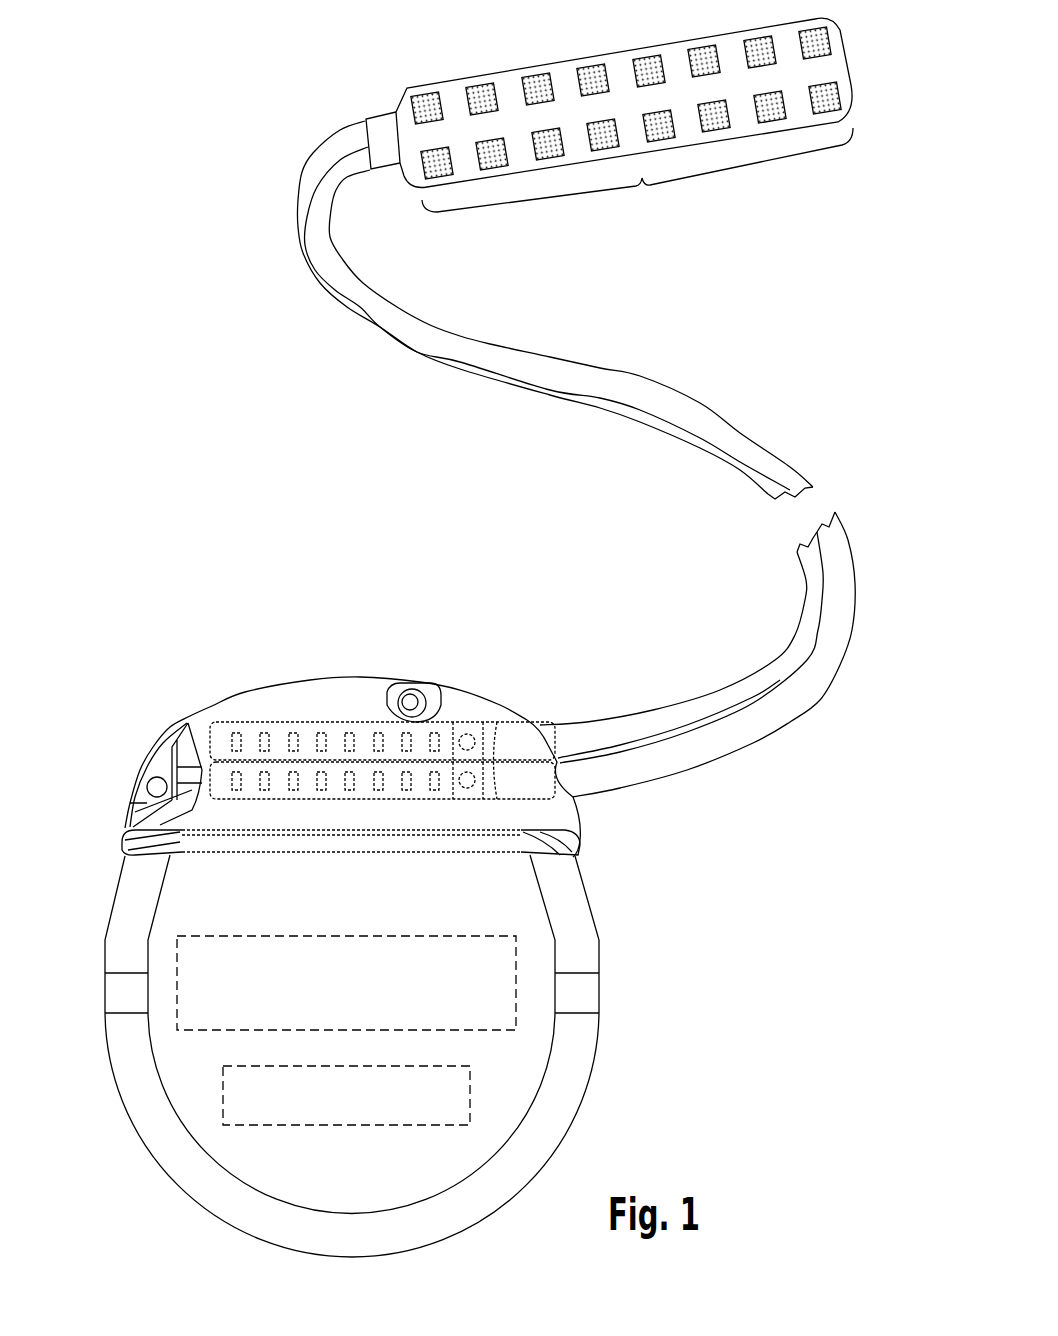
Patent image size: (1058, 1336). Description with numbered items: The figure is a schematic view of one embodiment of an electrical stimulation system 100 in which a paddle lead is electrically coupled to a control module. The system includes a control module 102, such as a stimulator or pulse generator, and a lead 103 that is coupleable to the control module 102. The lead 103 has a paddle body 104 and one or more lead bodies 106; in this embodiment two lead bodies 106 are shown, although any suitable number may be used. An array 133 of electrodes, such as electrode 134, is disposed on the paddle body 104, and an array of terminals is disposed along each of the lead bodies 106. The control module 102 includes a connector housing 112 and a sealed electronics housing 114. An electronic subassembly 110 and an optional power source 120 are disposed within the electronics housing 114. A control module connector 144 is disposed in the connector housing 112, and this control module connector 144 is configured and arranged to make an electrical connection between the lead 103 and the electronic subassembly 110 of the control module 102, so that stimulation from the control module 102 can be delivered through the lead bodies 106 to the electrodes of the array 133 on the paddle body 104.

The electrical stimulation system 100 is at (130, 148).
The control module 102 is at (148, 705).
The lead 103 is at (772, 374).
The paddle body 104 is at (834, 66).
The lead bodies 106 is at (673, 387).
The electronic subassembly 110 is at (196, 990).
The connector housing 112 is at (328, 690).
The sealed electronics housing 114 is at (177, 911).
The power source 120 is at (243, 1095).
The array of electrodes 133 is at (637, 130).
The electrode 134 is at (586, 68).
The control module connector 144 is at (444, 722).